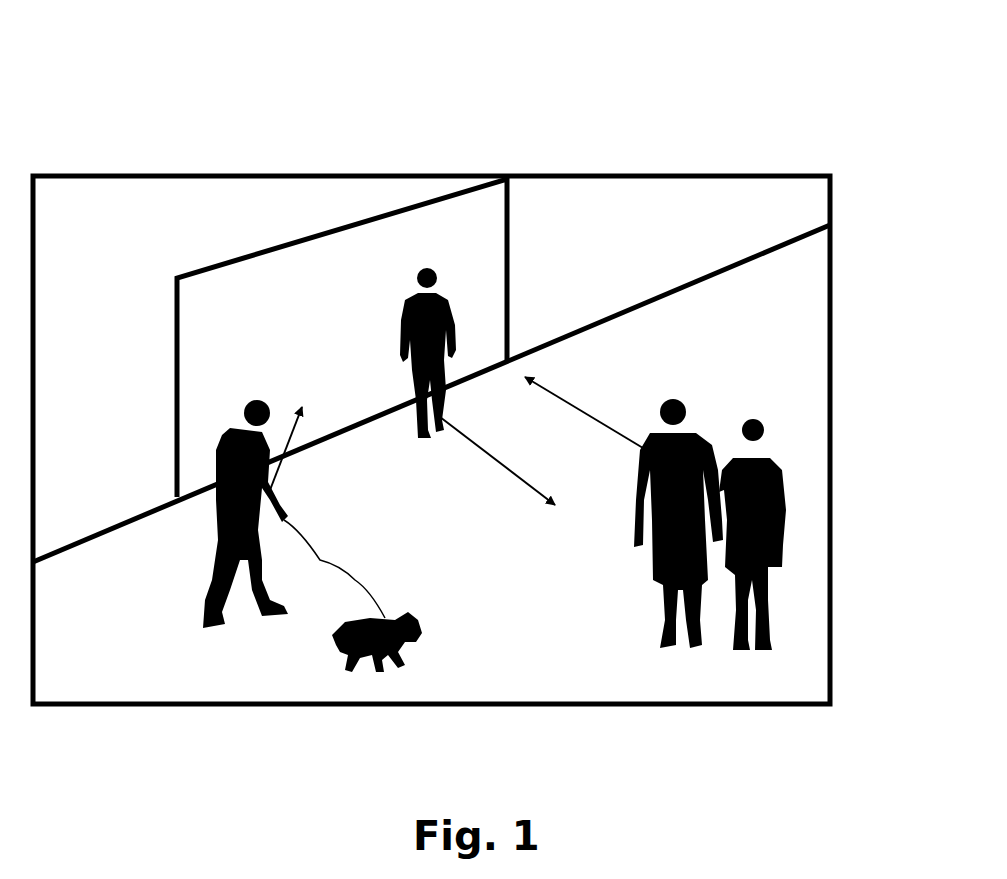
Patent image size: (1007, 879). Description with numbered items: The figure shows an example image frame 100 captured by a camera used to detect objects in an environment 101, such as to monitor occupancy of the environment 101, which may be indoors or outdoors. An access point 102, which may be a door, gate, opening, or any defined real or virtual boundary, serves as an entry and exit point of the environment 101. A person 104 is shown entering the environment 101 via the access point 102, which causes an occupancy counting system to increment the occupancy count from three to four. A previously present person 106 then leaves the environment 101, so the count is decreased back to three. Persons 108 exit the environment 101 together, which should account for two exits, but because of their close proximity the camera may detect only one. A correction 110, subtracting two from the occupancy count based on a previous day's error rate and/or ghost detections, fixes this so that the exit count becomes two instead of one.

The image frame 100 is at (486, 387).
The environment 101 is at (431, 440).
The access point 102 is at (200, 325).
The person 104 is at (435, 295).
The person 106 is at (280, 610).
The persons 108 is at (692, 608).
The correction 110 is at (623, 362).